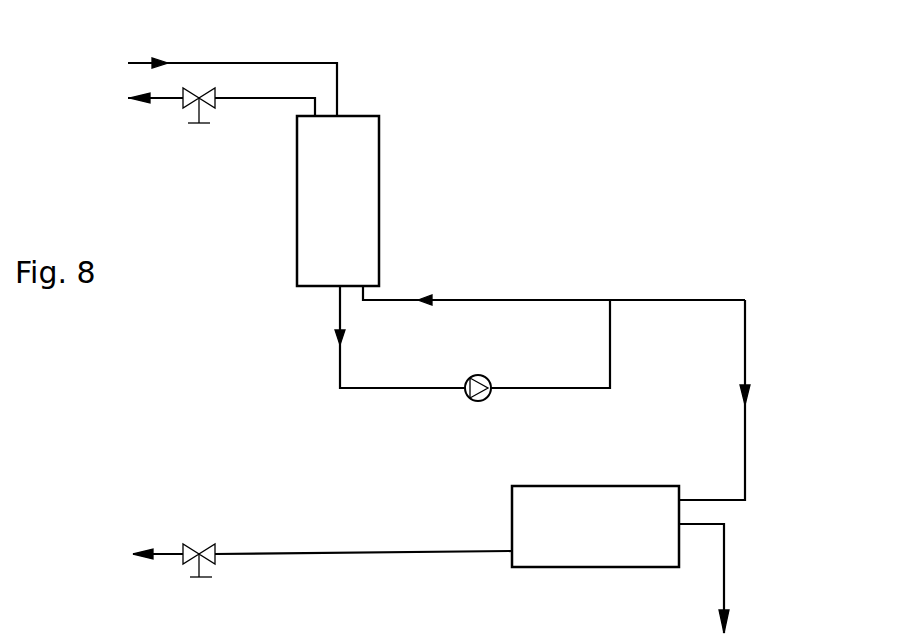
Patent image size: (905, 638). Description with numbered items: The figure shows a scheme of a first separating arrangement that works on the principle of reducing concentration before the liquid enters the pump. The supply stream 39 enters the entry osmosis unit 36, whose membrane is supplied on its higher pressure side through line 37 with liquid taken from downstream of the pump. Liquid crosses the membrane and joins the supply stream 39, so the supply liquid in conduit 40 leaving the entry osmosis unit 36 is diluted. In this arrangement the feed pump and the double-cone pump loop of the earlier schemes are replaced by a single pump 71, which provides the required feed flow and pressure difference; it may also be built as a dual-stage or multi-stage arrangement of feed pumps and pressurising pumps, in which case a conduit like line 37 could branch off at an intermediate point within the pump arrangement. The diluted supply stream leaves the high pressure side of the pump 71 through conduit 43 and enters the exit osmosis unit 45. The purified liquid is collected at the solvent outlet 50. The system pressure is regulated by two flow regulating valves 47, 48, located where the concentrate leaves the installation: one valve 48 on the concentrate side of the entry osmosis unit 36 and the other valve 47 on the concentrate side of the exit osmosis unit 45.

The supply stream 39 is at (206, 66).
The flow regulating valve 48 is at (195, 114).
The entry osmosis unit 36 is at (227, 201).
The line 37 is at (410, 326).
The conduit 40 is at (342, 343).
The pump 71 is at (283, 412).
The conduit 43 is at (706, 400).
The exit osmosis unit 45 is at (674, 504).
The solvent outlet 50 is at (757, 566).
The flow regulating valve 47 is at (292, 522).